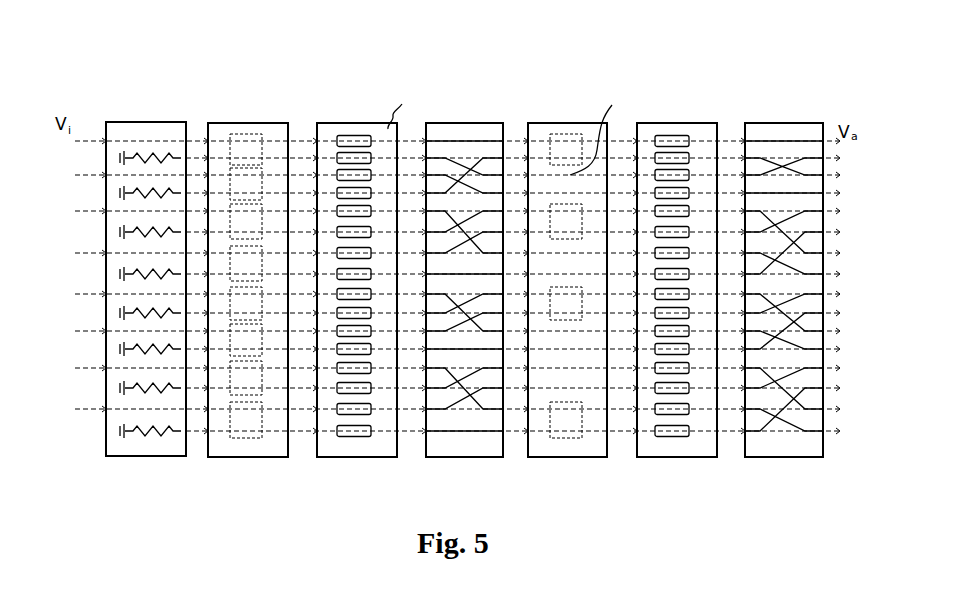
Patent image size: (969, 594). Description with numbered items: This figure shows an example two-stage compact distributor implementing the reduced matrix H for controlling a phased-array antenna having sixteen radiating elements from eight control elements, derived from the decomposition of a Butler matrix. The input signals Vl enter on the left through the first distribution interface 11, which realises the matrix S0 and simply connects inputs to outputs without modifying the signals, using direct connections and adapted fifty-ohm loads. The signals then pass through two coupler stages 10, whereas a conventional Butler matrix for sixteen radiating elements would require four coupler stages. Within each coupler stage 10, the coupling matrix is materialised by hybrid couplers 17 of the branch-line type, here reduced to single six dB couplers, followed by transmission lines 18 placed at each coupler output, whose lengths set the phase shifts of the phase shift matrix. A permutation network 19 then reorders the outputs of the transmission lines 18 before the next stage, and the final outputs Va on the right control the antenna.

The coupler stage 10 is at (814, 88).
The first distribution interface 11 is at (155, 131).
The hybrid couplers 17 is at (245, 134).
The transmission lines 18 is at (342, 131).
The permutation (crossing) network 19 is at (467, 131).